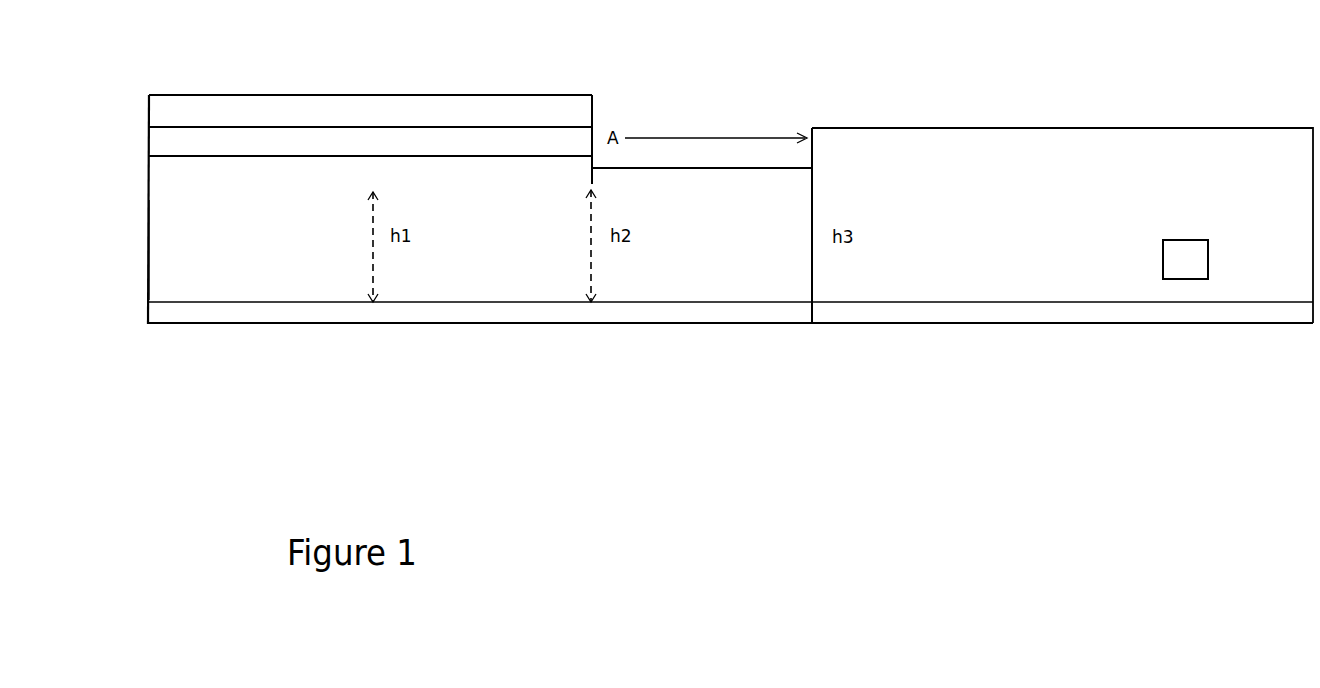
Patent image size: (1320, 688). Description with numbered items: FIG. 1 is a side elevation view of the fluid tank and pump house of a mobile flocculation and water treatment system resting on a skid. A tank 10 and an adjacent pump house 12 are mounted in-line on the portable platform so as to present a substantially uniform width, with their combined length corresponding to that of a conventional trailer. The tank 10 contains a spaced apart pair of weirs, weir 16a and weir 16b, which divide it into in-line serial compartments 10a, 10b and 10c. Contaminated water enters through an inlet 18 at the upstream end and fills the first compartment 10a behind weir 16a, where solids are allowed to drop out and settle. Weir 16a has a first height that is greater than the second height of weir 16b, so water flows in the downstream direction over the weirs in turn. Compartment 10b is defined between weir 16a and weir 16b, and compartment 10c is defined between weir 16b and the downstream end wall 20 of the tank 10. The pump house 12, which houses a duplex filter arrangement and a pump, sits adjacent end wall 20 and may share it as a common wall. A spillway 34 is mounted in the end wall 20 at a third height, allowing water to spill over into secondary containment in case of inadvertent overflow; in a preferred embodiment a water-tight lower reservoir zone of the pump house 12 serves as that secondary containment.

The tank 10 is at (718, 122).
The compartment 10a is at (182, 250).
The compartment 10b is at (435, 247).
The compartment 10c is at (658, 246).
The pump house 12 is at (1052, 127).
The weir 16a is at (378, 188).
The weir 16b is at (593, 167).
The inlet 18 is at (145, 195).
The end wall 20 is at (815, 185).
The spillway 34 is at (803, 208).